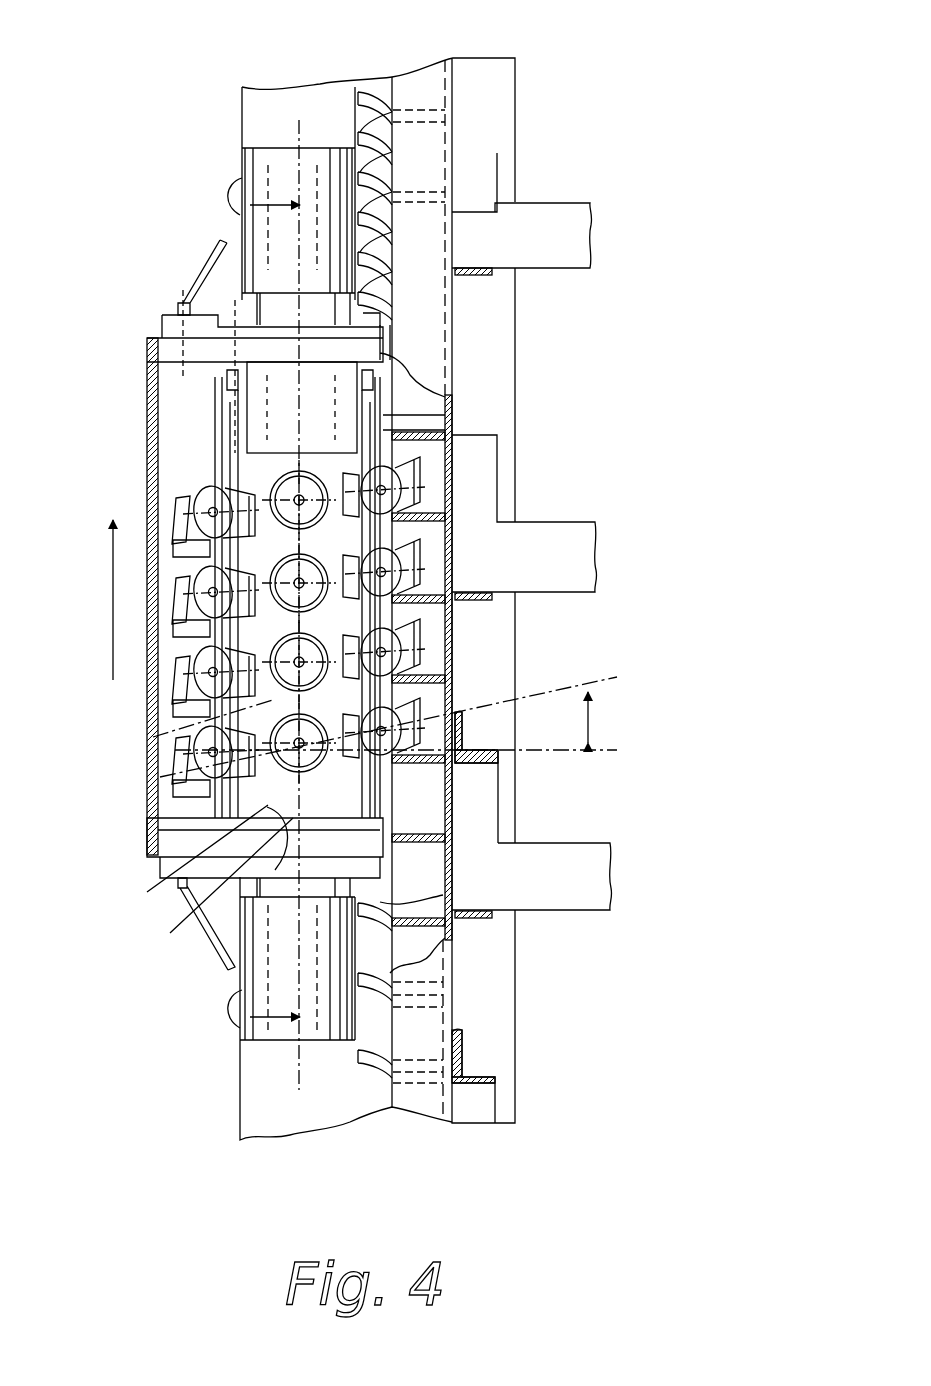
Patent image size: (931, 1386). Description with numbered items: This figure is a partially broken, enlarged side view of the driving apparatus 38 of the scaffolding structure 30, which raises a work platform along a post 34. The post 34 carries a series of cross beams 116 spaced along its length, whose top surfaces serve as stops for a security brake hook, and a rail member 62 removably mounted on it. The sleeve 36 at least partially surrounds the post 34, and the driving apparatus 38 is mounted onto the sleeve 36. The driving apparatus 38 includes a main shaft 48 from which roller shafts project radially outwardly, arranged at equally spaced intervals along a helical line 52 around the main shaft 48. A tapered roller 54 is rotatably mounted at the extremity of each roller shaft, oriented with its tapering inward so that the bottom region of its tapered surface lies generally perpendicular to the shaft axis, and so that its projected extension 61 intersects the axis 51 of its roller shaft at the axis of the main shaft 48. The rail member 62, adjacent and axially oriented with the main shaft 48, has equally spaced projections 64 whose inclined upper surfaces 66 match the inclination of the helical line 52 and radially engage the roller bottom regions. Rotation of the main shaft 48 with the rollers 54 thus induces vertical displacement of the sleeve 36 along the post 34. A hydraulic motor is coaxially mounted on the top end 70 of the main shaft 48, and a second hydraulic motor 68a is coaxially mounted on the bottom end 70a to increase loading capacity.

The scaffolding structure 30 is at (580, 1000).
The post 34 is at (517, 95).
The sleeve 36 is at (147, 357).
The driving apparatus 38 is at (165, 313).
The main shaft 48 is at (175, 876).
The axis of roller shaft 51 is at (605, 677).
The helical line 52 is at (267, 807).
The roller 54 is at (210, 528).
The projected extension 61 is at (607, 755).
The rail member 62 is at (375, 92).
The projection 64 is at (440, 662).
The inclined upper surface 66 is at (423, 910).
The second hydraulic motor 68a is at (215, 985).
The top end of main shaft 70 is at (260, 450).
The bottom end of main shaft 70a is at (267, 948).
The cross beam 116 is at (543, 220).